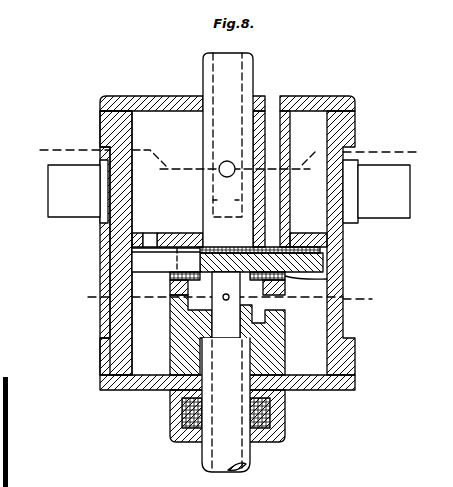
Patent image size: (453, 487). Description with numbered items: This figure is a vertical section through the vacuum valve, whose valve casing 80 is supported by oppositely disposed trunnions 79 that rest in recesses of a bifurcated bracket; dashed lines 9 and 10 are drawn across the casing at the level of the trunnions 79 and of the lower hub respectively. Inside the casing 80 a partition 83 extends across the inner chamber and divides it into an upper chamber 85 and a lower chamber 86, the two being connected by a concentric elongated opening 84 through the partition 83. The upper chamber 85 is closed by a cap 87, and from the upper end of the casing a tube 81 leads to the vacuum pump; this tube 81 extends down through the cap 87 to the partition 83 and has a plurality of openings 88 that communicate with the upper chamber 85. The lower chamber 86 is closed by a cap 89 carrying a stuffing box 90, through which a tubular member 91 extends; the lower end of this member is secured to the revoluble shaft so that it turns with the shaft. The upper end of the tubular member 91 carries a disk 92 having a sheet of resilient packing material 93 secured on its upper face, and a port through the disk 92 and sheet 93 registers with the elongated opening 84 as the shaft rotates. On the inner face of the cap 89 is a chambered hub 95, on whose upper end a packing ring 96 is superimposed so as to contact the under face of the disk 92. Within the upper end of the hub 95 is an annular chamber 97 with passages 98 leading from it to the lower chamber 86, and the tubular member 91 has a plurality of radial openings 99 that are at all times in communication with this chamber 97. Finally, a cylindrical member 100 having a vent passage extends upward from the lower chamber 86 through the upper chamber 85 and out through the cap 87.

The axis line of side shafts 9 is at (227, 154).
The axis line of lower pin 10 is at (227, 299).
The trunnions 79 is at (52, 187).
The valve casing 80 is at (345, 255).
The tube 81 is at (254, 66).
The partition 83 is at (177, 233).
The elongated opening 84 is at (150, 233).
The upper chamber 85 is at (157, 120).
The lower chamber 86 is at (116, 314).
The cap 87 is at (311, 98).
The openings 88 is at (220, 164).
The cap 89 is at (124, 392).
The stuffing box 90 is at (283, 425).
The tubular member 91 is at (247, 452).
The disk 92 is at (116, 266).
The sheet of resilient packing material 93 is at (116, 247).
The chambered hub 95 is at (276, 348).
The packing ring 96 is at (290, 277).
The annular chamber 97 is at (186, 320).
The passages 98 is at (175, 298).
The radial openings 99 is at (270, 297).
The cylindrical member 100 is at (282, 145).